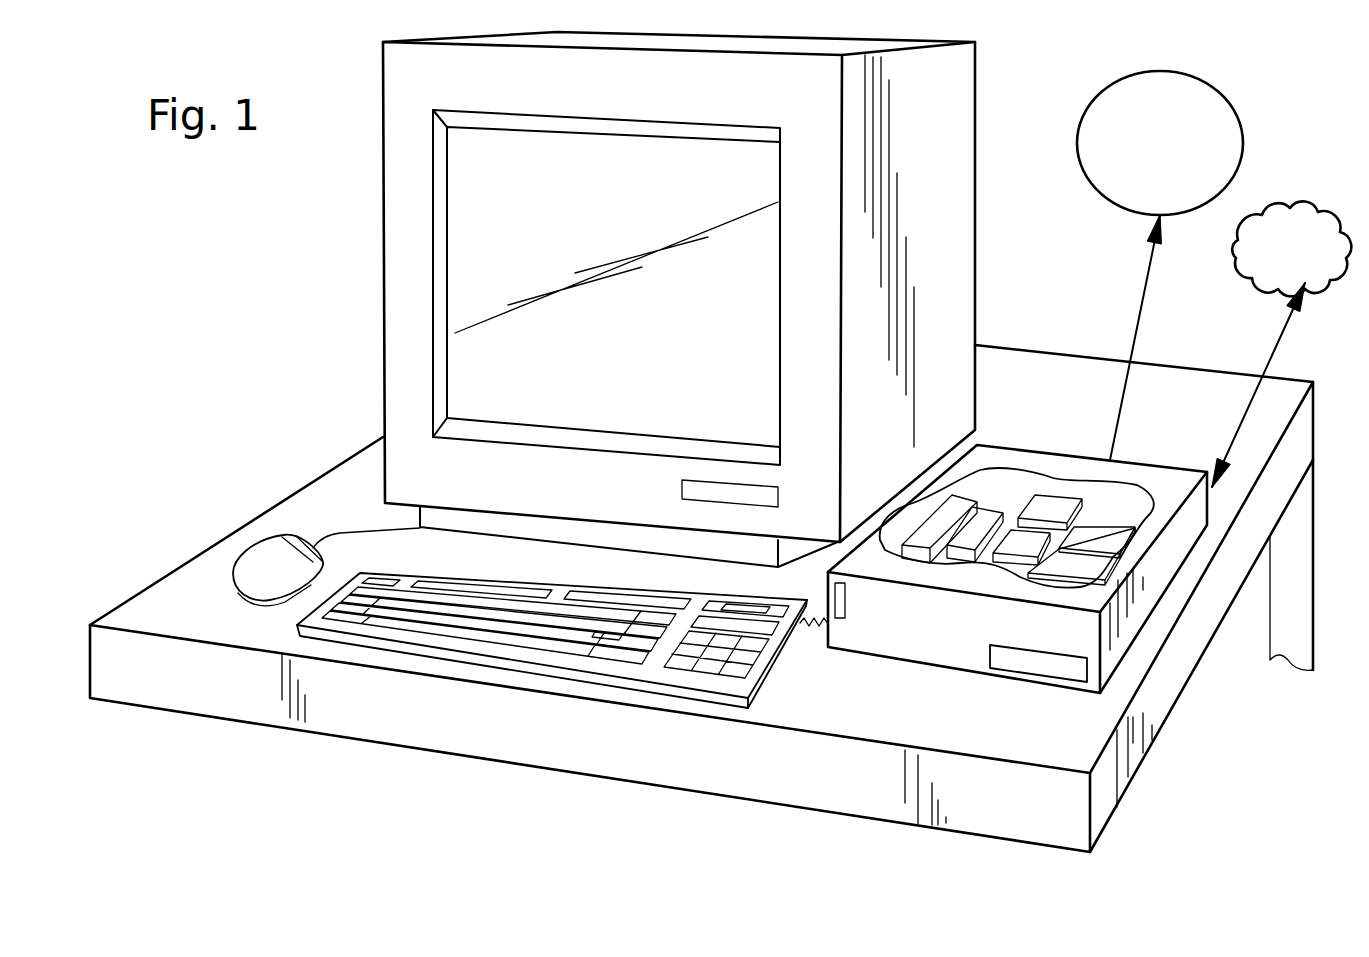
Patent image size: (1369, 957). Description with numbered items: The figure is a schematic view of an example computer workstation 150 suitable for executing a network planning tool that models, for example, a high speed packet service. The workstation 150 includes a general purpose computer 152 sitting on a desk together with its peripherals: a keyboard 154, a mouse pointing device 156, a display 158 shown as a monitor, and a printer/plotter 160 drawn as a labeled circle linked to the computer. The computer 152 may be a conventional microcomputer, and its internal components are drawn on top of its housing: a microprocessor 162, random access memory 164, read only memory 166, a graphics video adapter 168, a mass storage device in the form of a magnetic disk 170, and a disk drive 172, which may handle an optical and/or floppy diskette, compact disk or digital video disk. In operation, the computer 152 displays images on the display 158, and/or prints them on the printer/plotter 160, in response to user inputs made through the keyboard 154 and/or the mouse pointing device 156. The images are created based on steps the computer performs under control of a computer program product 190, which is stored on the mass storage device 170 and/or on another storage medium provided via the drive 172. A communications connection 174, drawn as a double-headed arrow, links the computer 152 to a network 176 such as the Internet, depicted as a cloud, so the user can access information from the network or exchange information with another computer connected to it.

The computer workstation 150 is at (1060, 327).
The general purpose computer 152 is at (987, 440).
The keyboard 154 is at (767, 683).
The mouse pointing device 156 is at (268, 560).
The display 158 is at (972, 103).
The printer/plotter 160 is at (1207, 85).
The microprocessor 162 is at (984, 503).
The random access memory 164 is at (1050, 478).
The read only memory 166 is at (1013, 558).
The graphics video adapter 168 is at (913, 559).
The magnetic disk 170 is at (1085, 525).
The disk drive 172 is at (1006, 670).
The communications connection 174 is at (1237, 428).
The network 176 is at (1291, 248).
The computer program product 190 is at (1110, 505).